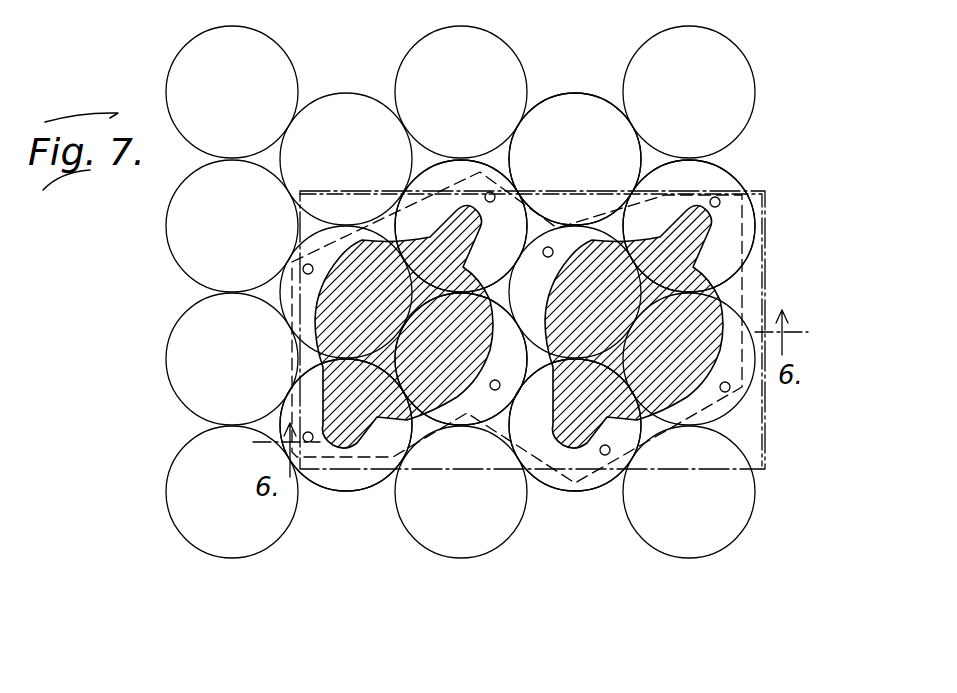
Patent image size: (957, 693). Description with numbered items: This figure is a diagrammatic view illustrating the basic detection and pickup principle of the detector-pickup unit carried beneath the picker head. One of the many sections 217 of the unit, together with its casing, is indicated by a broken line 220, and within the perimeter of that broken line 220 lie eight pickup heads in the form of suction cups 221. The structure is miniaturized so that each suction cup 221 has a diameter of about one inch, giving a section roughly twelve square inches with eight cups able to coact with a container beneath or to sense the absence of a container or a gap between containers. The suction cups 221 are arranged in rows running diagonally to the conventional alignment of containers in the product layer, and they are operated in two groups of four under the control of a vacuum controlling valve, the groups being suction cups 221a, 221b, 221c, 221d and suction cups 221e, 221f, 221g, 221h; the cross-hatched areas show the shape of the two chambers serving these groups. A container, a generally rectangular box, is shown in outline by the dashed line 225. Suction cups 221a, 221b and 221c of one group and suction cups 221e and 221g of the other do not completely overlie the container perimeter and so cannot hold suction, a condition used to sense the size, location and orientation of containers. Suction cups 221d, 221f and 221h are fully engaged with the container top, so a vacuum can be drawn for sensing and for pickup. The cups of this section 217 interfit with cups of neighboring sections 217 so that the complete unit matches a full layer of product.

The section 217 is at (777, 186).
The broken line 220 is at (743, 294).
The suction cup 221 is at (743, 95).
The suction cup 221a is at (338, 483).
The suction cup 221b is at (290, 276).
The suction cup 221c is at (452, 172).
The suction cup 221d is at (480, 407).
The suction cup 221e is at (590, 495).
The suction cup 221f is at (730, 404).
The suction cup 221g is at (750, 233).
The suction cup 221h is at (572, 242).
The dashed line 225 is at (765, 469).